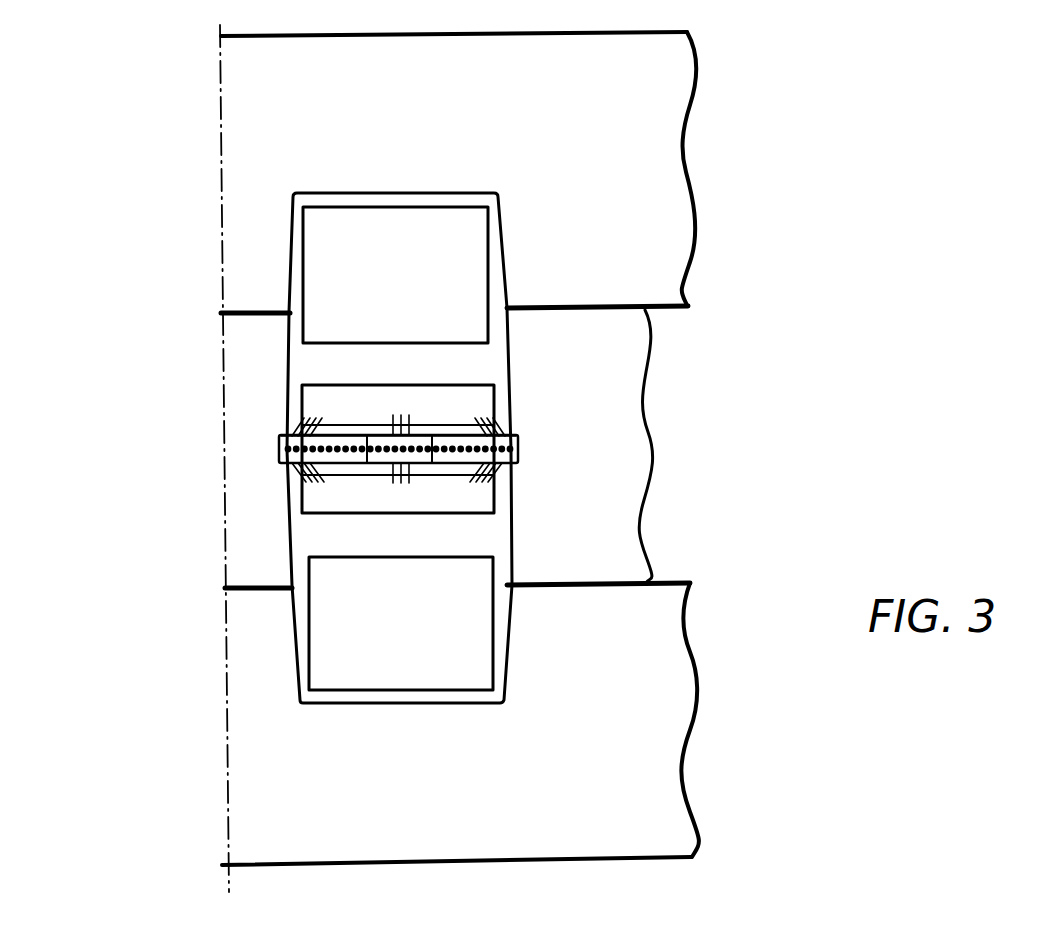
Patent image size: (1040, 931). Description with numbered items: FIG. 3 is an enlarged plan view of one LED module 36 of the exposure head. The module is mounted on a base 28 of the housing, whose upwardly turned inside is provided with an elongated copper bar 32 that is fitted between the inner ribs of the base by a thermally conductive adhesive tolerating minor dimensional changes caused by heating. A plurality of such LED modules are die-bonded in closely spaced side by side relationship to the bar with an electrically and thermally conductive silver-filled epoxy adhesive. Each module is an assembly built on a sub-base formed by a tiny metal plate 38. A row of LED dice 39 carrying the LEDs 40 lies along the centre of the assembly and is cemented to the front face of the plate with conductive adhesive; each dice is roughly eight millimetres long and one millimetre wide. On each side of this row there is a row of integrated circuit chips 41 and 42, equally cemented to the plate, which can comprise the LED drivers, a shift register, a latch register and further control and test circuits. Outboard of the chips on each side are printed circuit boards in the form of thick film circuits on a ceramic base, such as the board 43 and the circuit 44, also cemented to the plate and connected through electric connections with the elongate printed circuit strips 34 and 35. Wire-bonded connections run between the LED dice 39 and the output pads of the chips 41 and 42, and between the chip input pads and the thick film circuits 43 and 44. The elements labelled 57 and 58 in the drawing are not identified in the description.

The base 28 is at (183, 337).
The elongated copper bar 32 is at (633, 510).
The elongate printed circuit strip 34 is at (250, 128).
The elongate printed circuit strip 35 is at (246, 742).
The LED module 36 is at (283, 213).
The metal plate 38 is at (302, 535).
The LED dice 39 is at (279, 453).
The LEDs 40 is at (285, 440).
The integrated circuit chips 41 is at (313, 403).
The integrated circuit chips 42 is at (303, 490).
The printed circuit board 43 is at (313, 243).
The thick film circuit 44 is at (315, 628).
The upper leads 57 is at (503, 426).
The lower leads 58 is at (500, 463).